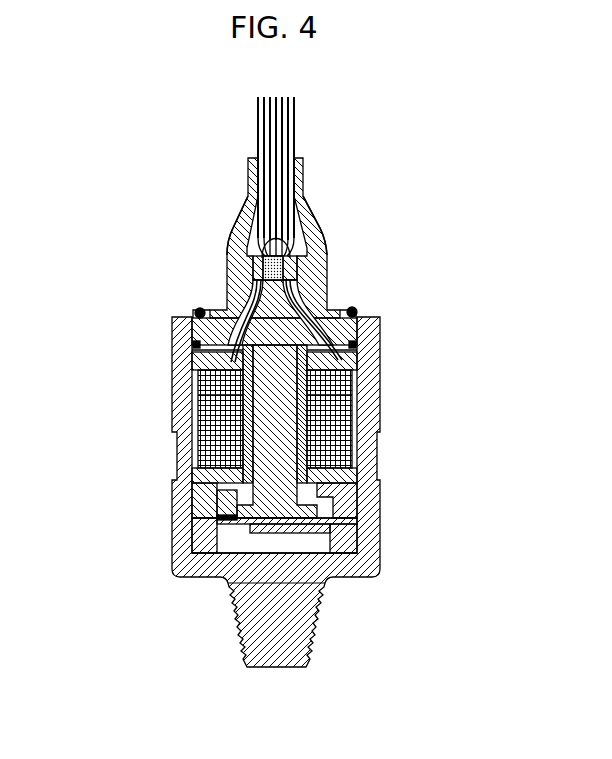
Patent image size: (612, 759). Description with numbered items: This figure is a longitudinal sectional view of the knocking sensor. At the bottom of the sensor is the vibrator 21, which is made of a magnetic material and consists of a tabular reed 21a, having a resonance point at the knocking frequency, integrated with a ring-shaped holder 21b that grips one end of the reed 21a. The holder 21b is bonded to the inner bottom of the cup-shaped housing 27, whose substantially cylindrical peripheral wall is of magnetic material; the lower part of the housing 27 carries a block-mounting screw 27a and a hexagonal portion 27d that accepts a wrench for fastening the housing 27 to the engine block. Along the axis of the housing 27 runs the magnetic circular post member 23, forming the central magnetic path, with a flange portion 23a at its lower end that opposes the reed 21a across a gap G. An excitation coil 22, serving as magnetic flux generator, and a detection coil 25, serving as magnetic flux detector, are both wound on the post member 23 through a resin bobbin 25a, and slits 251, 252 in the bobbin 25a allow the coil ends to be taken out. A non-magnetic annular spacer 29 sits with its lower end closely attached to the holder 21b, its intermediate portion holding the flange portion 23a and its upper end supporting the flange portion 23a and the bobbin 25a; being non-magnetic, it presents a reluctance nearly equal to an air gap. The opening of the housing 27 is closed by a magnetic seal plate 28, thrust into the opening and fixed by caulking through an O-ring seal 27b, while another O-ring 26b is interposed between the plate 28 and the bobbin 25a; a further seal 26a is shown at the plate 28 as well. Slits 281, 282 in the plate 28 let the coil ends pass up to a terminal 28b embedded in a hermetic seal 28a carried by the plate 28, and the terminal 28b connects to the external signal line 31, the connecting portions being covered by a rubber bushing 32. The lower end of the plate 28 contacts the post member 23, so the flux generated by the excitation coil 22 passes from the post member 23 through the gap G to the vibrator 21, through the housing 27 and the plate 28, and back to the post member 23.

The vibrator 21 is at (325, 590).
The tabular reed 21a is at (283, 546).
The holder 21b is at (195, 552).
The excitation coil 22 is at (348, 390).
The magnetic circular post member 23 is at (292, 383).
The flange portion 23a is at (357, 527).
The detection coil 25 is at (347, 450).
The resin bobbin 25a is at (353, 477).
The slit 251 is at (342, 356).
The slit 252 is at (222, 357).
The O-ring seal 26a is at (355, 312).
The O-ring 26b is at (354, 345).
The housing 27 is at (178, 389).
The block-mounting screw 27a is at (229, 598).
The O-ring seal 27b is at (197, 312).
The hexagonal portion 27d is at (357, 520).
The seal plate 28 is at (192, 333).
The hermetic seal 28a is at (232, 253).
The terminal 28b is at (313, 245).
The slit 281 is at (297, 328).
The slit 282 is at (232, 302).
The annular spacer 29 is at (193, 494).
The external signal line 31 is at (283, 123).
The rubber bushing 32 is at (250, 213).
The gap G is at (194, 518).